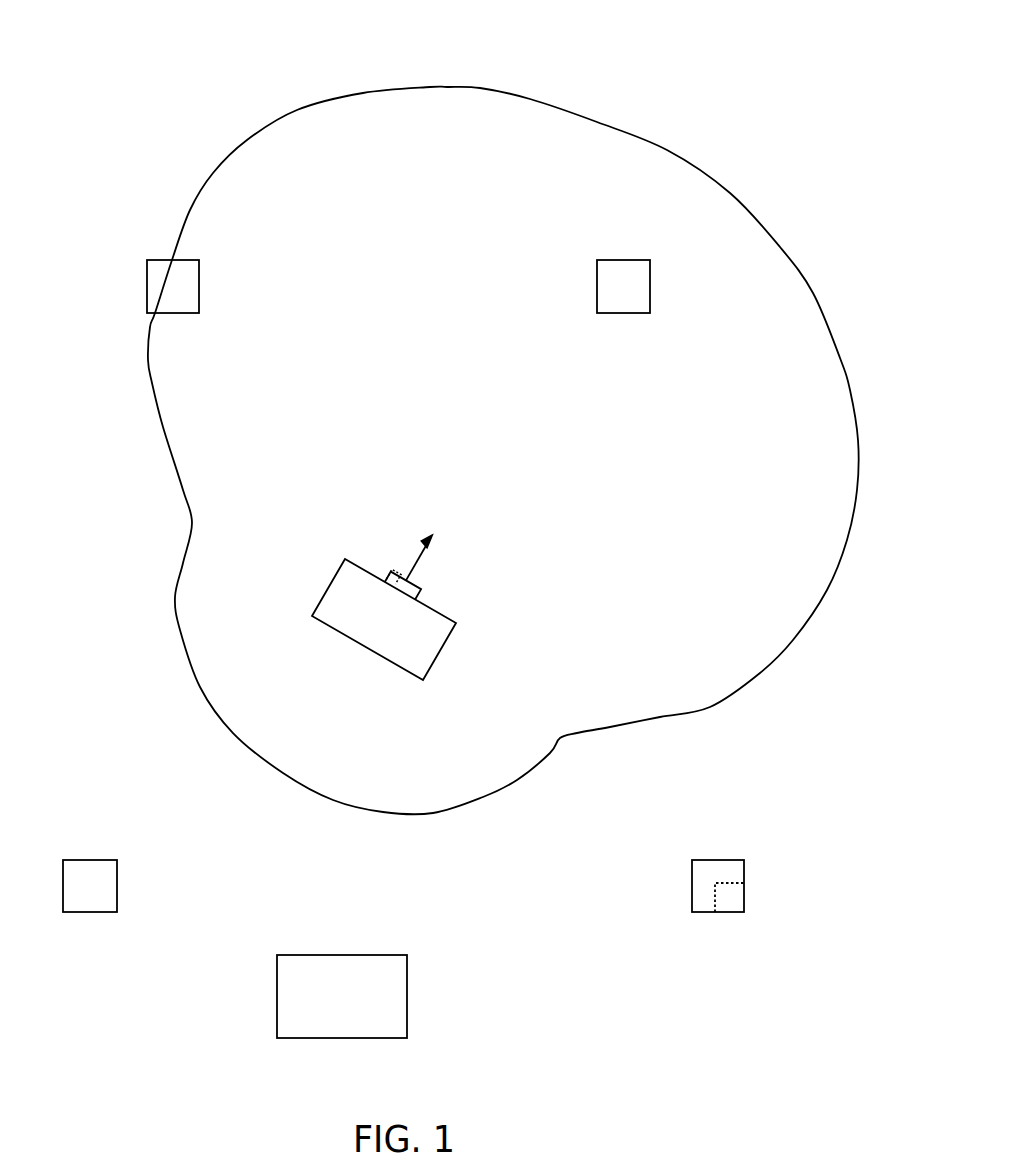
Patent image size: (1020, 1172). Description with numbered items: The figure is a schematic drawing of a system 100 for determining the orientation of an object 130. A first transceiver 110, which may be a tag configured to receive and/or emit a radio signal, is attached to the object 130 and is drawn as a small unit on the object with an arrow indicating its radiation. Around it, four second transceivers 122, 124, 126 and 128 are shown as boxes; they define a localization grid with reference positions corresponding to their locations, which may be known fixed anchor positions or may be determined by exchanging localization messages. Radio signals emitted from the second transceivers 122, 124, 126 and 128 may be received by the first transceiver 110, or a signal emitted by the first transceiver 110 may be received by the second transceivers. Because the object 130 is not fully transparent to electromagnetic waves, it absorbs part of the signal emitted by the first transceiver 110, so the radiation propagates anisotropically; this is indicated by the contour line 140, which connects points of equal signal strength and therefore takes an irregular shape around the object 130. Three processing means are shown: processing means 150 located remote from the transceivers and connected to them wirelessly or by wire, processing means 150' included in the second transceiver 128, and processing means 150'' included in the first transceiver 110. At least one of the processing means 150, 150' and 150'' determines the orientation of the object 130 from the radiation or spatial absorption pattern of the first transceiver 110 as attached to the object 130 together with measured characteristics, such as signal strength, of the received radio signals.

The system 100 is at (387, 24).
The first transceiver 110 is at (421, 589).
The second transceiver 122 is at (597, 283).
The second transceiver 124 is at (199, 283).
The second transceiver 126 is at (117, 882).
The second transceiver 128 is at (692, 883).
The object 130 is at (456, 623).
The contour line 140 is at (667, 150).
The processing means 150 is at (394, 978).
The processing means 150' is at (778, 873).
The processing means 150'' is at (370, 545).